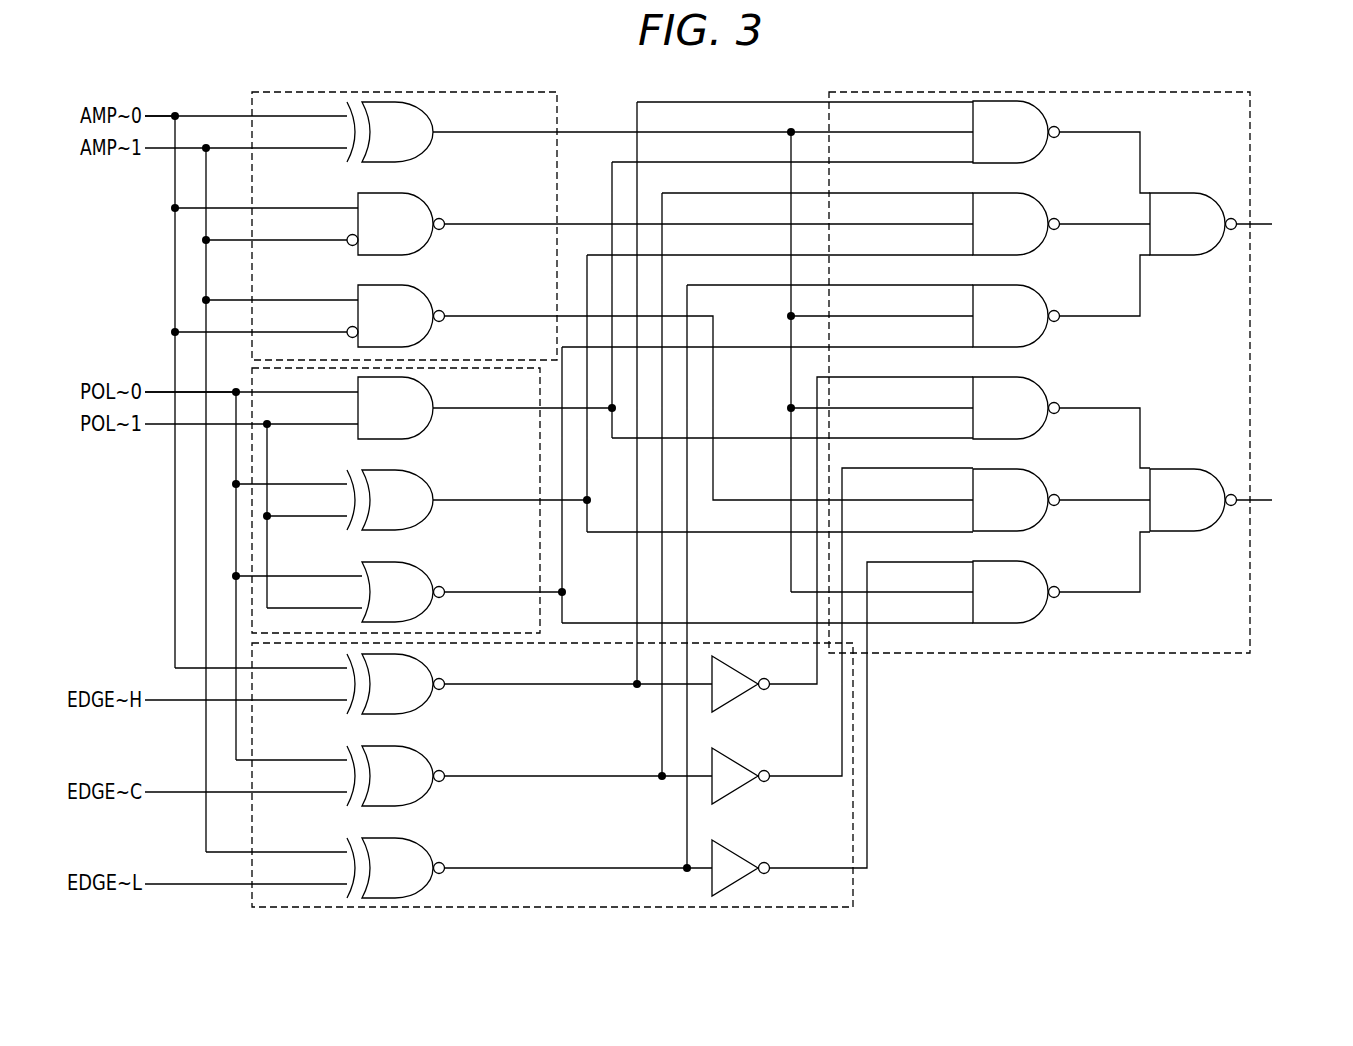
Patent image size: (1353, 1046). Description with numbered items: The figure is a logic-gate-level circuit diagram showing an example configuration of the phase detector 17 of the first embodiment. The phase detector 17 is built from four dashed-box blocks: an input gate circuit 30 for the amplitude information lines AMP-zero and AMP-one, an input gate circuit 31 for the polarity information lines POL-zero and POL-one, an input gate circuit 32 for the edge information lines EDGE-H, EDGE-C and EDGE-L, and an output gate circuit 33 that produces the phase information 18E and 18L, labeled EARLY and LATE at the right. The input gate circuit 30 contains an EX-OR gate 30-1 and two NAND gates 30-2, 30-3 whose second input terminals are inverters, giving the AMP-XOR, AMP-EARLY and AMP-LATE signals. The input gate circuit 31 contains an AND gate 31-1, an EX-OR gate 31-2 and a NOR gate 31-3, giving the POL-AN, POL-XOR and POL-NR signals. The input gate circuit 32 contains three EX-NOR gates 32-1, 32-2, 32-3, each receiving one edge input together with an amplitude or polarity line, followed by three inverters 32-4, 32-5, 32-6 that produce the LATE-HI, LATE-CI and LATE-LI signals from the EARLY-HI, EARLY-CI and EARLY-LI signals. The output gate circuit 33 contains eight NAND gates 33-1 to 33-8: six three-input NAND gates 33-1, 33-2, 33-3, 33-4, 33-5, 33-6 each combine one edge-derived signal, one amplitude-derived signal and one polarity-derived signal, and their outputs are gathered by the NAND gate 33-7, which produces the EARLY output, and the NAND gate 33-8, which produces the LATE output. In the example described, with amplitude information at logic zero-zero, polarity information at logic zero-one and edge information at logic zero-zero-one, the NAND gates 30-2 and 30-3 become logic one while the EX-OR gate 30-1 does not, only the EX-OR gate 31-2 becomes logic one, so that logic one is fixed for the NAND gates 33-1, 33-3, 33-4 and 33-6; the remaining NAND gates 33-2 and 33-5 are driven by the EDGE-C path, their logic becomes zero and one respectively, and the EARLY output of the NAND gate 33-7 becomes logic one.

The phase detector 17 is at (140, 486).
The input gate circuit 30 is at (252, 190).
The EX-OR gate 30-1 is at (437, 120).
The NAND gate 30-2 is at (437, 212).
The NAND gate 30-3 is at (437, 304).
The input gate circuit 31 is at (252, 458).
The AND gate 31-1 is at (437, 396).
The EX-OR gate 31-2 is at (437, 488).
The NOR gate 31-3 is at (437, 580).
The input gate circuit 32 is at (252, 831).
The EX-NOR gate 32-1 is at (437, 672).
The EX-NOR gate 32-2 is at (437, 764).
The EX-NOR gate 32-3 is at (437, 856).
The inverter 32-4 is at (740, 666).
The inverter 32-5 is at (740, 758).
The inverter 32-6 is at (740, 850).
The output gate circuit 33 is at (1252, 283).
The NAND gate 33-1 is at (1052, 120).
The NAND gate 33-2 is at (1052, 212).
The NAND gate 33-3 is at (1052, 304).
The NAND gate 33-4 is at (1052, 396).
The NAND gate 33-5 is at (1052, 488).
The NAND gate 33-6 is at (1052, 580).
The NAND gate 33-7 is at (1180, 192).
The NAND gate 33-8 is at (1180, 468).
The phase information 18E is at (1300, 206).
The phase information 18L is at (1300, 482).